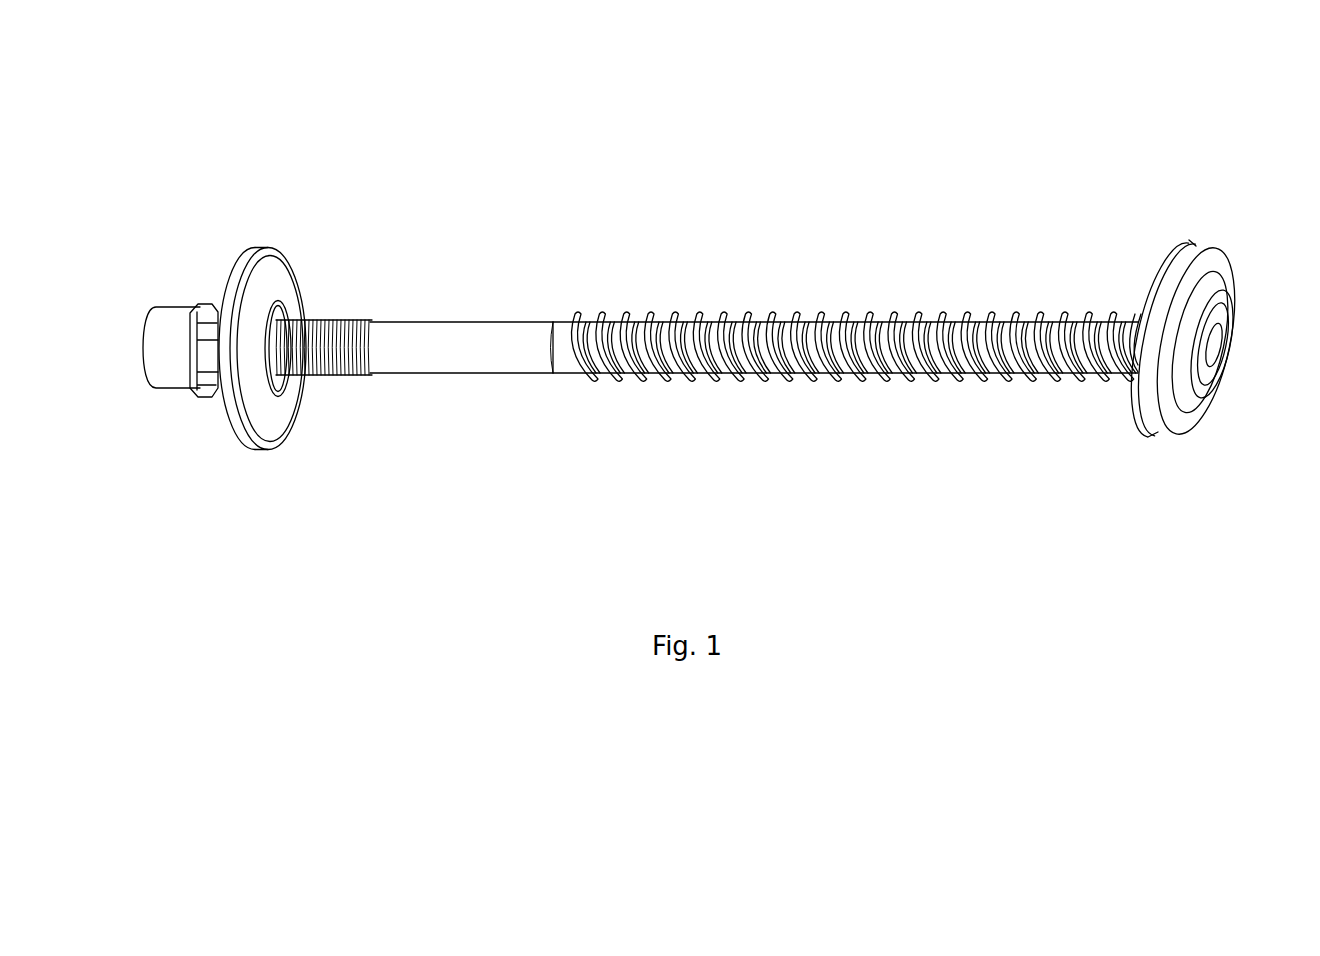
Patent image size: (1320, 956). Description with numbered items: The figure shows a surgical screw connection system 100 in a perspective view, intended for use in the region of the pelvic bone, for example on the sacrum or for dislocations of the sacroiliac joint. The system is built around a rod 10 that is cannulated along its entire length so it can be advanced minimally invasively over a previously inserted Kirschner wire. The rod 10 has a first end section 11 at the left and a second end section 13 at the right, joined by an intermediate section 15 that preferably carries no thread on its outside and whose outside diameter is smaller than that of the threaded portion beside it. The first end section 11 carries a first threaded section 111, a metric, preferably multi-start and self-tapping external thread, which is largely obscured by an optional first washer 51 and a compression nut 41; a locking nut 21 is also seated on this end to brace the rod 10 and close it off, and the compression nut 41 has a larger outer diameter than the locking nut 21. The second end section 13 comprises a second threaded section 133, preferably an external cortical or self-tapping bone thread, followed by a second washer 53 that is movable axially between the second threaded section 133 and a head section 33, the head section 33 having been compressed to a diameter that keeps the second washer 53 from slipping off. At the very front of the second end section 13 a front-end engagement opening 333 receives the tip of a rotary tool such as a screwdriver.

The surgical screw connection system 100 is at (687, 520).
The rod 10 is at (705, 328).
The first end section 11 is at (168, 250).
The second end section 13 is at (1208, 226).
The intermediate section 15 is at (553, 388).
The locking nut 21 is at (163, 380).
The compression nut 41 is at (204, 313).
The first washer 51 is at (275, 425).
The second washer 53 is at (1163, 400).
The head section 33 is at (1208, 383).
The first threaded section 111 is at (335, 322).
The second threaded section 133 is at (987, 365).
The front-end engagement opening 333 is at (1215, 344).